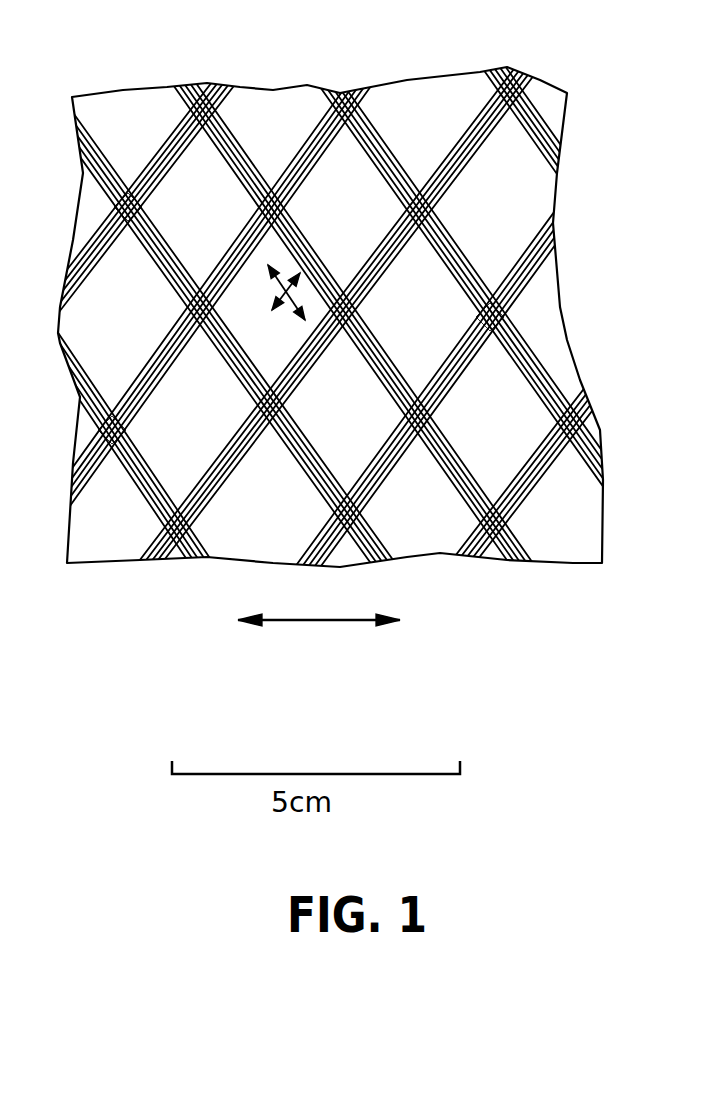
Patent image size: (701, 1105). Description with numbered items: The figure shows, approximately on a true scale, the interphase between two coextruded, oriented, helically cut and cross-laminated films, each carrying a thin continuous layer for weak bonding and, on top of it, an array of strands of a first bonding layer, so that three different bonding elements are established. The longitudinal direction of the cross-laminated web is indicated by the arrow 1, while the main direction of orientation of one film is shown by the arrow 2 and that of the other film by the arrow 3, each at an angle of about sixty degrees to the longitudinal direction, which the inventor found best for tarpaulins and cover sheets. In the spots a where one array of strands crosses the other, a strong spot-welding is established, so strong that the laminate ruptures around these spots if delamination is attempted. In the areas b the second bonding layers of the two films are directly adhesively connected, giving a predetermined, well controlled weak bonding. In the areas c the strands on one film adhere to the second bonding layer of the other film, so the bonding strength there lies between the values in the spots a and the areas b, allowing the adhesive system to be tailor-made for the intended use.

The strong spot-welding spots a is at (110, 204).
The weak bonding areas b is at (522, 203).
The intermediate bonding areas c is at (303, 157).
The longitudinal direction arrow 1 is at (319, 604).
The main orientation direction arrow of one film 2 is at (266, 319).
The main orientation direction arrow of the other film 3 is at (272, 281).